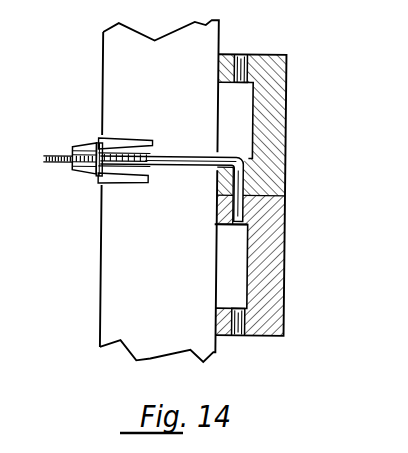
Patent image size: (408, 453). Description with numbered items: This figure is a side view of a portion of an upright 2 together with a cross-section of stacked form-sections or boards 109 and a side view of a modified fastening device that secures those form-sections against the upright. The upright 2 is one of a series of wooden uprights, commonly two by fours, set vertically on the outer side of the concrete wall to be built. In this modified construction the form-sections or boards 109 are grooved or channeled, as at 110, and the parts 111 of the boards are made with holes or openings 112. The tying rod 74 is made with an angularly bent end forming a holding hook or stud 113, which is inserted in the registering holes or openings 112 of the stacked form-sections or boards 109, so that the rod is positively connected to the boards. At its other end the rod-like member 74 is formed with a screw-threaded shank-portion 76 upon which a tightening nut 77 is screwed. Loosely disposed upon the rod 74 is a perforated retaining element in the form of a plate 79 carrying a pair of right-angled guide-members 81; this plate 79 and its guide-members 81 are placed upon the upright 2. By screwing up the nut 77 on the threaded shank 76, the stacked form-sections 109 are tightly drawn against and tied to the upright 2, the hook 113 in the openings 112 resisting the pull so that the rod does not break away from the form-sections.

The upright 2 is at (112, 86).
The rod-like member 74 is at (182, 157).
The screw-threaded shank-portion 76 is at (70, 155).
The tightening nut 77 is at (80, 178).
The plate 79 is at (99, 180).
The right-angled guide-members 81 is at (130, 143).
The form-sections or boards 109 is at (281, 213).
The grooves or channels 110 is at (239, 107).
The parts of the form-sections 111 is at (254, 53).
The holes or openings 112 is at (239, 53).
The holding hook or stud 113 is at (216, 208).